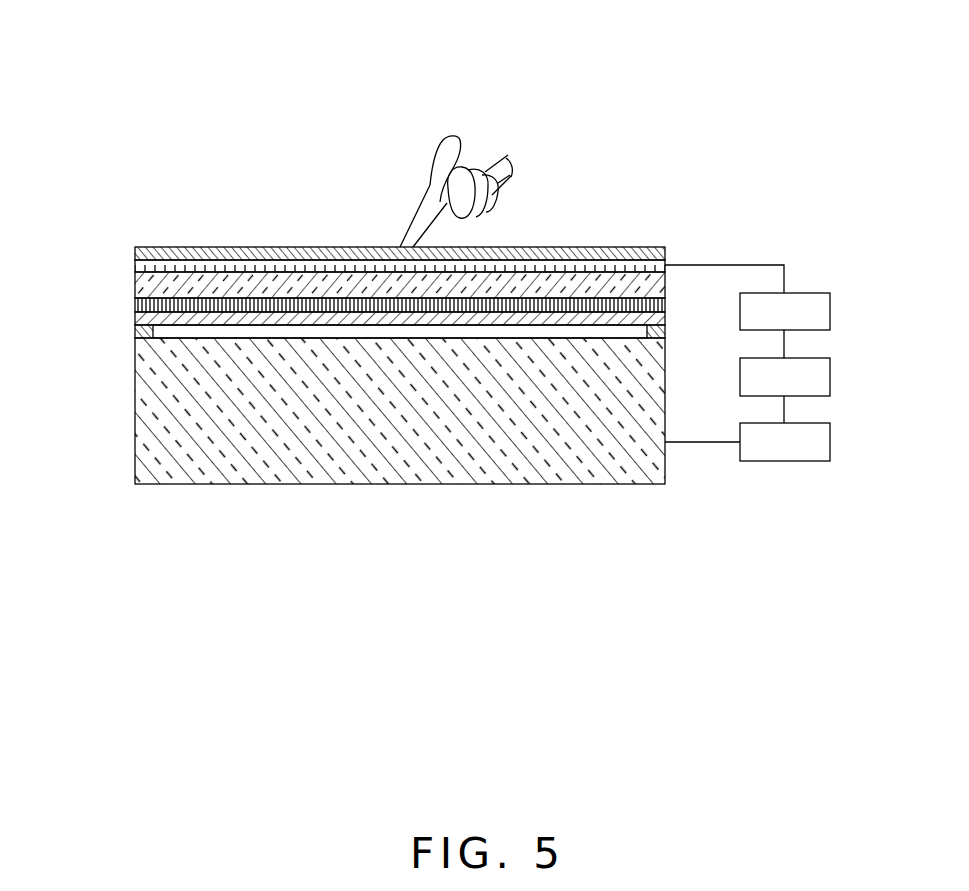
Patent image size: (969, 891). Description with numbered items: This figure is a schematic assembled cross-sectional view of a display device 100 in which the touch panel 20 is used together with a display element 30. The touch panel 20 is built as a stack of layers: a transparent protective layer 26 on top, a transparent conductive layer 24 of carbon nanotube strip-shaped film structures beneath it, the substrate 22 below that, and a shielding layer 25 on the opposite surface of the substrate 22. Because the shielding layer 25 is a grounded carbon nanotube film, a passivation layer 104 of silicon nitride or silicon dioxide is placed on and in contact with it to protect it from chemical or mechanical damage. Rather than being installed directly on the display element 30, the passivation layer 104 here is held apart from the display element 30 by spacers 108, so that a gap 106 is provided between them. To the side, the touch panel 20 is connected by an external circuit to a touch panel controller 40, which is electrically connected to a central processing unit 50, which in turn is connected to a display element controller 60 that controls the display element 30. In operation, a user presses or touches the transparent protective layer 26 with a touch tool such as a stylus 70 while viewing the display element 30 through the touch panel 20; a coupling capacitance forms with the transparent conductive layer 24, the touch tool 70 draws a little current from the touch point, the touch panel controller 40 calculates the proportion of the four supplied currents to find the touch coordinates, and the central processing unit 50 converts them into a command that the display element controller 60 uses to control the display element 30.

The display device 100 is at (463, 38).
The touch panel 20 is at (54, 231).
The transparent protective layer 26 is at (135, 252).
The transparent conductive layer 24 is at (135, 266).
The substrate 22 is at (135, 285).
The shielding layer 25 is at (135, 305).
The passivation layer 104 is at (134, 318).
The gap 106 is at (652, 331).
The spacers 108 is at (137, 338).
The display element 30 is at (157, 408).
The touch panel controller 40 is at (832, 311).
The central processing unit 50 is at (832, 376).
The display element controller 60 is at (832, 442).
The electrical pen/stylus 70 is at (437, 167).